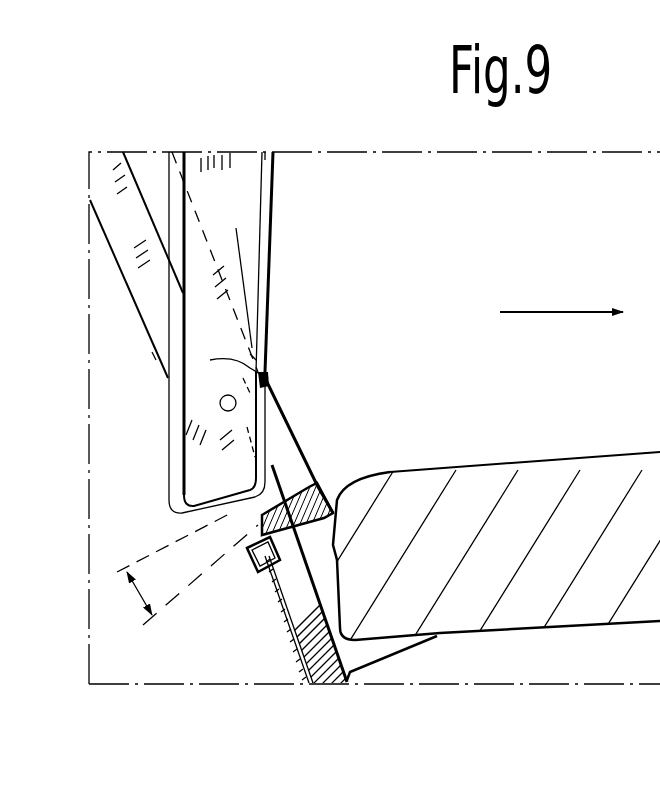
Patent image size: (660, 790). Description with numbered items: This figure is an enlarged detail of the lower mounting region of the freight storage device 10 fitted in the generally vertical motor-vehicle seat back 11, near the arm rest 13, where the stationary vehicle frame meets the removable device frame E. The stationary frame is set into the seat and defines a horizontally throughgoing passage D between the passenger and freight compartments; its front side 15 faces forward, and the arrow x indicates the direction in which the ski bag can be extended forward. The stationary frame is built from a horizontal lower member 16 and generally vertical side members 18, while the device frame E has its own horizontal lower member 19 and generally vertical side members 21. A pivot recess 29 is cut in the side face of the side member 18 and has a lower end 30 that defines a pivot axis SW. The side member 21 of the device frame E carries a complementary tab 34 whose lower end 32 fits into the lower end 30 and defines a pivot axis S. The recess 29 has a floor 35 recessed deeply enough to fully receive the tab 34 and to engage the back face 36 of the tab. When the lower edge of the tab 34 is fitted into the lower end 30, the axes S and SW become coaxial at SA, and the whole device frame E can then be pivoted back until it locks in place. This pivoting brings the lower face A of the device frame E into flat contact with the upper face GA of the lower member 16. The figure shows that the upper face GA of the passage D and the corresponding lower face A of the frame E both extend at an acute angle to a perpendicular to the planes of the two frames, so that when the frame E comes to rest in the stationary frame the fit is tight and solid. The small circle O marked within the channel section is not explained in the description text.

The freight storage device 10 is at (384, 207).
The motor-vehicle seat back 11 is at (87, 230).
The arm rest 13 is at (566, 458).
The front side 15 is at (303, 450).
The lower member 16 is at (240, 568).
The side members 18 is at (112, 187).
The lower member 19 is at (160, 520).
The side members 21 is at (240, 170).
The pivot recesses 29 is at (199, 214).
The lower end 30 is at (240, 374).
The lower end 32 is at (273, 369).
The tabs 34 is at (278, 268).
The floors 35 is at (220, 266).
The back faces 36 is at (259, 265).
The device frame E is at (288, 203).
The pivot axis S is at (250, 352).
The passage D is at (150, 354).
The pivot axis SW is at (235, 371).
The coaxial pivot axis SA is at (274, 388).
The upper face GA is at (246, 527).
The lower face A is at (190, 521).
The forward direction x is at (555, 312).
The pivot point O is at (228, 403).